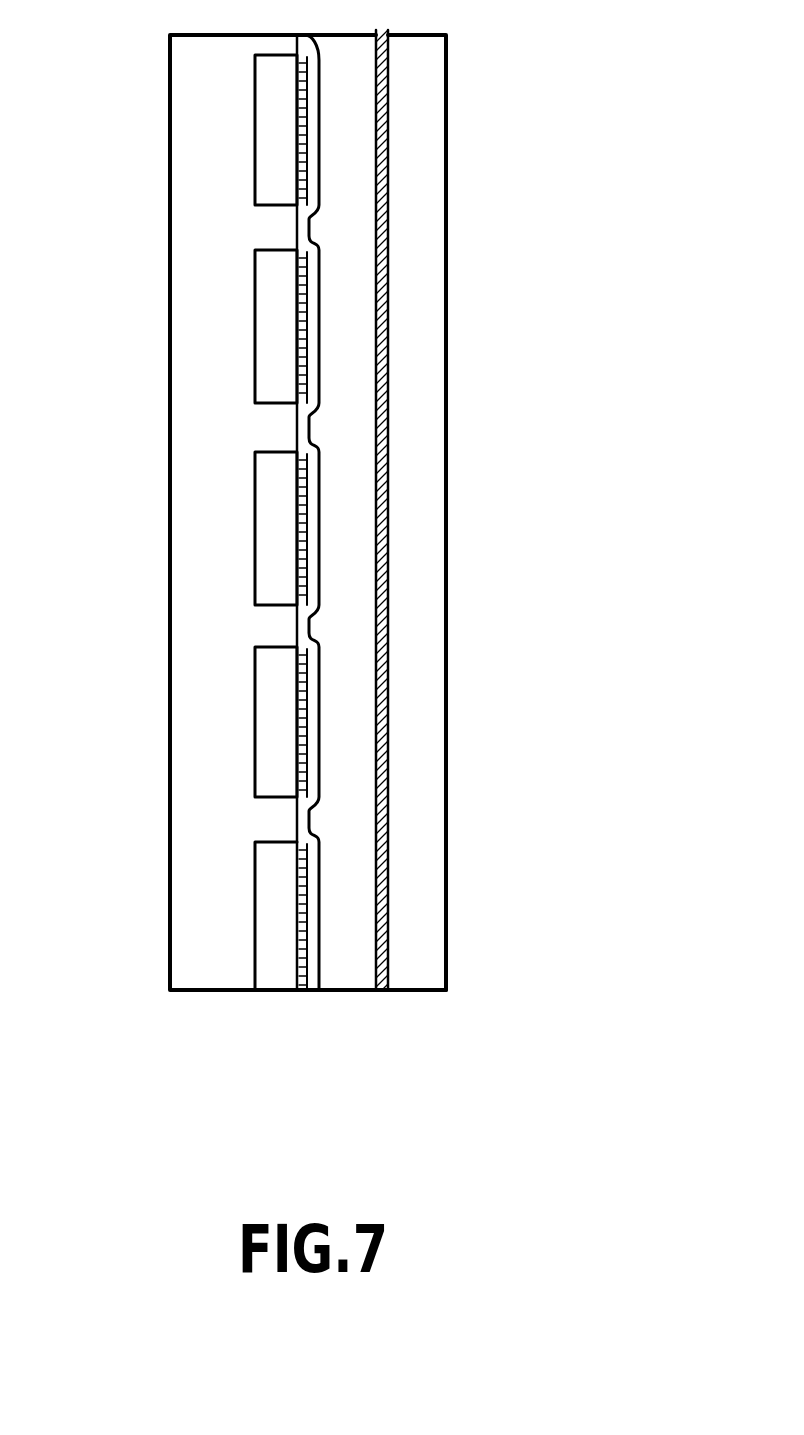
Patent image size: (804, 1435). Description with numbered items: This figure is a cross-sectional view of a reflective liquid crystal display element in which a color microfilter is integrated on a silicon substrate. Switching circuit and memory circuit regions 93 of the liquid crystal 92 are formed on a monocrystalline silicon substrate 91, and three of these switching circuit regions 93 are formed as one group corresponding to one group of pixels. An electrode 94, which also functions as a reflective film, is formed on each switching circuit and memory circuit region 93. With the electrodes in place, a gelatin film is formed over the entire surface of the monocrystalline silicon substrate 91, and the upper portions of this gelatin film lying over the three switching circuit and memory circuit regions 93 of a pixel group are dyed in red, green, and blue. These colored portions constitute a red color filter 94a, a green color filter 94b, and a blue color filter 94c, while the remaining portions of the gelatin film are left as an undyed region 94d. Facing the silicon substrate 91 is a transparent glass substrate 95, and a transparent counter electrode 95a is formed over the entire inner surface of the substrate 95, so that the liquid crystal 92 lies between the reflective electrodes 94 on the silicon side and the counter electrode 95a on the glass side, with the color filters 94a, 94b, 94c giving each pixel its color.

The monocrystalline silicon substrate 91 is at (202, 992).
The liquid crystal 92 is at (340, 980).
The switching circuit and memory circuit region 93 is at (268, 980).
The electrode 94 is at (293, 778).
The red color filter 94a is at (303, 695).
The green color filter 94b is at (303, 510).
The blue color filter 94c is at (307, 327).
The undyed region 94d is at (307, 220).
The transparent glass substrate 95 is at (430, 975).
The transparent counter electrode 95a is at (377, 993).